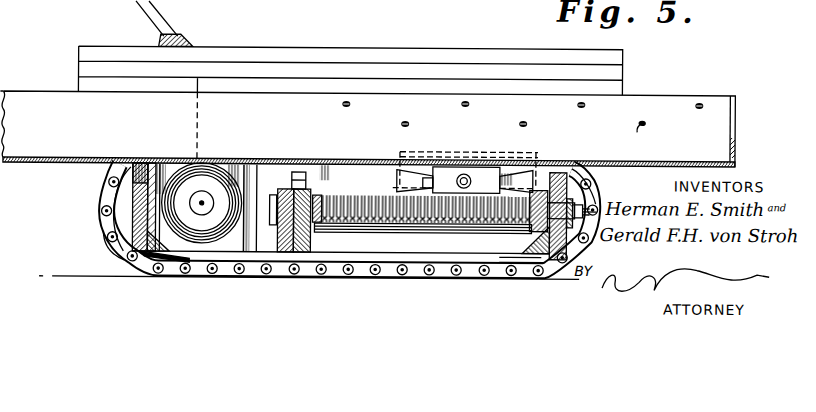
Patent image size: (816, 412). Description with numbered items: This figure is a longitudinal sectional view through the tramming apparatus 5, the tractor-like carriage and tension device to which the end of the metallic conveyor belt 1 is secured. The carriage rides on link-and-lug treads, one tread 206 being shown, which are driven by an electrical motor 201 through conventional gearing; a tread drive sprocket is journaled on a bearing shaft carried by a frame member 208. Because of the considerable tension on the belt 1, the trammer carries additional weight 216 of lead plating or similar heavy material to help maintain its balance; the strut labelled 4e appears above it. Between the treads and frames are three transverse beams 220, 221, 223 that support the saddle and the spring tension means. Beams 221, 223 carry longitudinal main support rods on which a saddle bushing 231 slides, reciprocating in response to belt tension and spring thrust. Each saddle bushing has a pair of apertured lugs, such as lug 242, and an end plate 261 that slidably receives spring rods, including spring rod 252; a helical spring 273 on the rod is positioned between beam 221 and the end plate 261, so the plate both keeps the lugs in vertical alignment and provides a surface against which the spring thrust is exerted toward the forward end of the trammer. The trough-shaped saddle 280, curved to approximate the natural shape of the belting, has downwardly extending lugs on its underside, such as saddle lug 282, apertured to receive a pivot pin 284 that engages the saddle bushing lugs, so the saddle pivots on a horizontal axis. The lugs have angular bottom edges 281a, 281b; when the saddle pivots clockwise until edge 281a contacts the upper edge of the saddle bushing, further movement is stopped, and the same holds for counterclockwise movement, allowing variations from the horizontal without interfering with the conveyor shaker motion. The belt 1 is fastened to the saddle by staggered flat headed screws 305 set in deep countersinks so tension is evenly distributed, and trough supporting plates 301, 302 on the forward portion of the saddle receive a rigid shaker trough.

The belt 1 is at (41, 164).
The strut 4e is at (140, 6).
The tramming apparatus 5 is at (598, 183).
The electrical motor 201 is at (238, 191).
The tread 206 is at (111, 243).
The frame member 208 is at (422, 250).
The additional weight 216 is at (311, 47).
The transverse beam 220 is at (128, 205).
The transverse beam 221 is at (280, 236).
The transverse beam 223 is at (556, 266).
The saddle bushing 231 is at (446, 231).
The lug 242 is at (437, 168).
The spring rod 252 is at (376, 224).
The saddle bushing end plate 261 is at (528, 226).
The helical spring 273 is at (347, 224).
The saddle 280 is at (683, 86).
The angular bottom edge 281a is at (543, 175).
The angular bottom edge 281b is at (416, 181).
The saddle lug 282 is at (398, 173).
The pivot pin 284 is at (471, 166).
The trough supporting plate 301 is at (736, 151).
The trough supporting plate 302 is at (736, 103).
The flat headed screw 305 is at (648, 136).